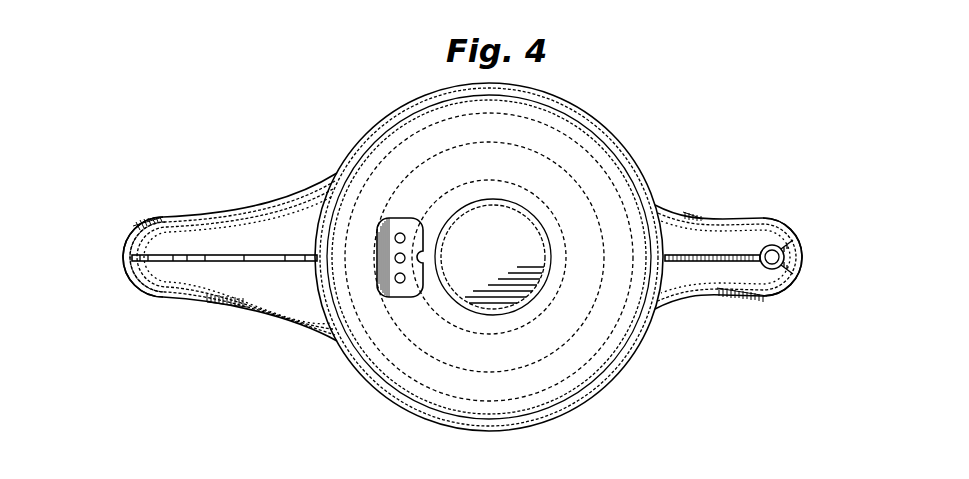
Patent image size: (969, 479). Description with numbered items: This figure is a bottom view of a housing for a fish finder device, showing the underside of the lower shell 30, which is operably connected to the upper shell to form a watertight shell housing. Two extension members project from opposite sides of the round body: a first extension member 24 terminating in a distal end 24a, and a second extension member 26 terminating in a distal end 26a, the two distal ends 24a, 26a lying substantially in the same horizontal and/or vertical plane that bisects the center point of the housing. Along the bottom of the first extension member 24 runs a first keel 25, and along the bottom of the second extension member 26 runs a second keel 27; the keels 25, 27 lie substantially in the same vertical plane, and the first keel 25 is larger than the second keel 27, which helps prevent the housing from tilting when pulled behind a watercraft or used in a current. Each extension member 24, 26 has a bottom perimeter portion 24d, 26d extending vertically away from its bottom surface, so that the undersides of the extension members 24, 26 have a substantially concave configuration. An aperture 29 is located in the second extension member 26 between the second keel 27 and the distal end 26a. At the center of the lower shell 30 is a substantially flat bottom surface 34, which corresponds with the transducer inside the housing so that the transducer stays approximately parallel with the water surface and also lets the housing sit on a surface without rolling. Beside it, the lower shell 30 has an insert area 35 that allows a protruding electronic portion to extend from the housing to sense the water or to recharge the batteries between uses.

The first extension member 24 is at (183, 297).
The distal end of first extension member 24a is at (124, 253).
The bottom perimeter portion of first extension member 24d is at (223, 213).
The first keel 25 is at (207, 255).
The second extension member 26 is at (722, 290).
The distal end of second extension member 26a is at (793, 238).
The bottom perimeter portion of second extension member 26d is at (780, 290).
The second keel 27 is at (685, 256).
The aperture 29 is at (778, 257).
The lower shell 30 is at (504, 360).
The substantially flat bottom surface 34 is at (499, 263).
The insert area 35 is at (405, 228).